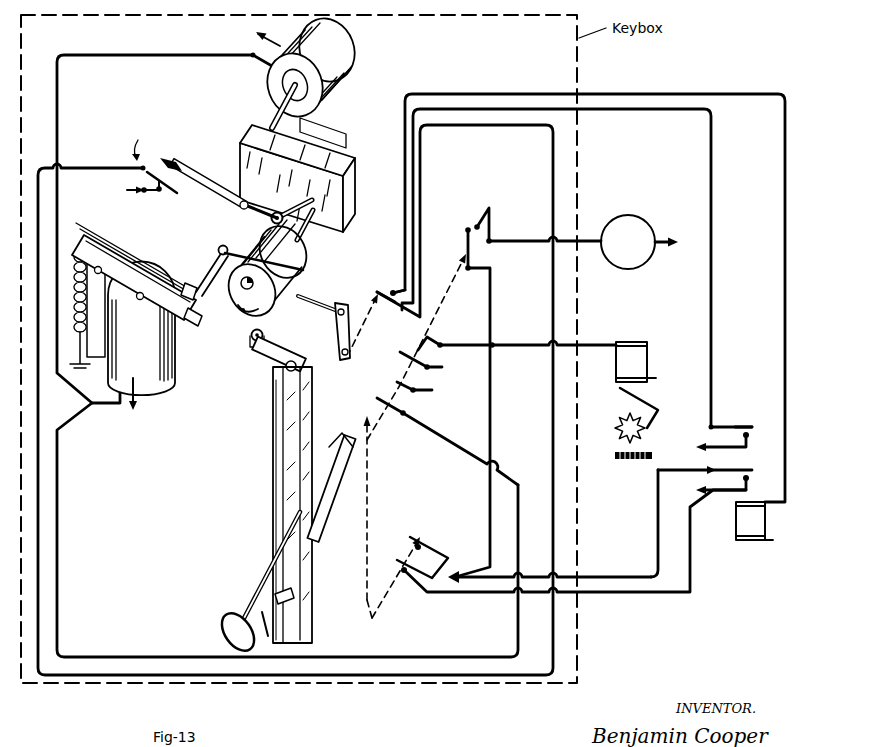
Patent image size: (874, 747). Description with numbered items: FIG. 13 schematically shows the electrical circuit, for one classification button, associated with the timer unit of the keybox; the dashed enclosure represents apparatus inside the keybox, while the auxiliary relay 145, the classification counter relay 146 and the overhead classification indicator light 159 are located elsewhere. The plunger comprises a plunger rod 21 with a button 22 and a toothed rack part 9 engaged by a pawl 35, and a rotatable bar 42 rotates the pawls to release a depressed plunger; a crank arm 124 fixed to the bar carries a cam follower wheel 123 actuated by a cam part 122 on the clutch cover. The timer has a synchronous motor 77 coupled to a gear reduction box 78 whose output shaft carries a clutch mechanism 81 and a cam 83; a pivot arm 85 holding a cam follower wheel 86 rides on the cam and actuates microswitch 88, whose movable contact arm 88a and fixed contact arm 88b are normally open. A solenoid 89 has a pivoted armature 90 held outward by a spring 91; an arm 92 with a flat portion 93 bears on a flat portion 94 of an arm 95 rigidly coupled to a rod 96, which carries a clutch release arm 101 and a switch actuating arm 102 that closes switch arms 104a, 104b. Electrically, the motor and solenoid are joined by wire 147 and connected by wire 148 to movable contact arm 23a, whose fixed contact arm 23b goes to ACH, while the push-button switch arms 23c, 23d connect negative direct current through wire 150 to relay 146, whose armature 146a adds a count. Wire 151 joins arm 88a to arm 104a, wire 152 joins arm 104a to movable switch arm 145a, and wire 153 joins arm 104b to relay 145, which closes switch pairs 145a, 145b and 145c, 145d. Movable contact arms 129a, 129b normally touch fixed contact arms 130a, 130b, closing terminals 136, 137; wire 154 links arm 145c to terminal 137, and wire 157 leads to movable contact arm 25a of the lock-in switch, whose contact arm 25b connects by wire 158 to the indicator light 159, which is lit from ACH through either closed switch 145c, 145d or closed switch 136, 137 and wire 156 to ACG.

The toothed rack part 9 is at (256, 596).
The plunger rod 21 is at (330, 500).
The button 22 is at (222, 627).
The movable contact arm 23a is at (386, 420).
The fixed contact arm 23b is at (408, 395).
The movable contact arm 23c is at (414, 371).
The fixed contact arm 23d is at (437, 340).
The movable contact arm 25a is at (468, 273).
The contact arm 25b is at (490, 216).
The pawl 35 is at (268, 636).
The bar 42 is at (313, 416).
The synchronous motor 77 is at (353, 84).
The gear reduction box 78 is at (336, 162).
The clutch mechanism 81 is at (238, 296).
The cam 83 is at (306, 266).
The pivot arm 85 is at (207, 170).
The cam follower wheel 86 is at (271, 218).
The microswitch 88 is at (141, 140).
The movable contact arm 88a is at (157, 178).
The fixed contact arm 88b is at (163, 197).
The solenoid 89 is at (168, 378).
The armature 90 is at (120, 256).
The spring 91 is at (75, 328).
The arm 92 is at (192, 330).
The flat portion 93 is at (188, 282).
The flat portion 94 is at (200, 318).
The arm 95 is at (218, 249).
The rod 96 is at (236, 252).
The clutch release arm 101 is at (318, 313).
The switch actuating arm 102 is at (342, 360).
The movable contact arm 104a is at (379, 292).
The fixed contact arm 104b is at (392, 290).
The cam part 122 is at (242, 312).
The cam follower wheel 123 is at (250, 340).
The crank arm 124 is at (262, 360).
The movable contact arm 129a is at (378, 618).
The movable contact arm 129b is at (412, 534).
The fixed contact arm 130a is at (406, 577).
The fixed contact arm 130b is at (425, 546).
The switch terminal 136 is at (430, 594).
The contact terminal 137 is at (460, 572).
The auxiliary relay 145 is at (736, 540).
The movable switch arm 145a is at (725, 427).
The fixed contact arm 145b is at (748, 438).
The movable contact arm 145c is at (742, 470).
The fixed contact arm 145d is at (748, 489).
The classification counter relay 146 is at (650, 355).
The armature 146a is at (660, 404).
The wire 147 is at (121, 60).
The wire 148 is at (58, 512).
The wire 150 is at (542, 338).
The wire 151 is at (38, 430).
The wire 152 is at (715, 184).
The wire 153 is at (785, 240).
The wire 154 is at (655, 530).
The wire 156 is at (662, 588).
The wire 157 is at (492, 436).
The wire 158 is at (541, 251).
The overhead classification indicator light 159 is at (642, 216).